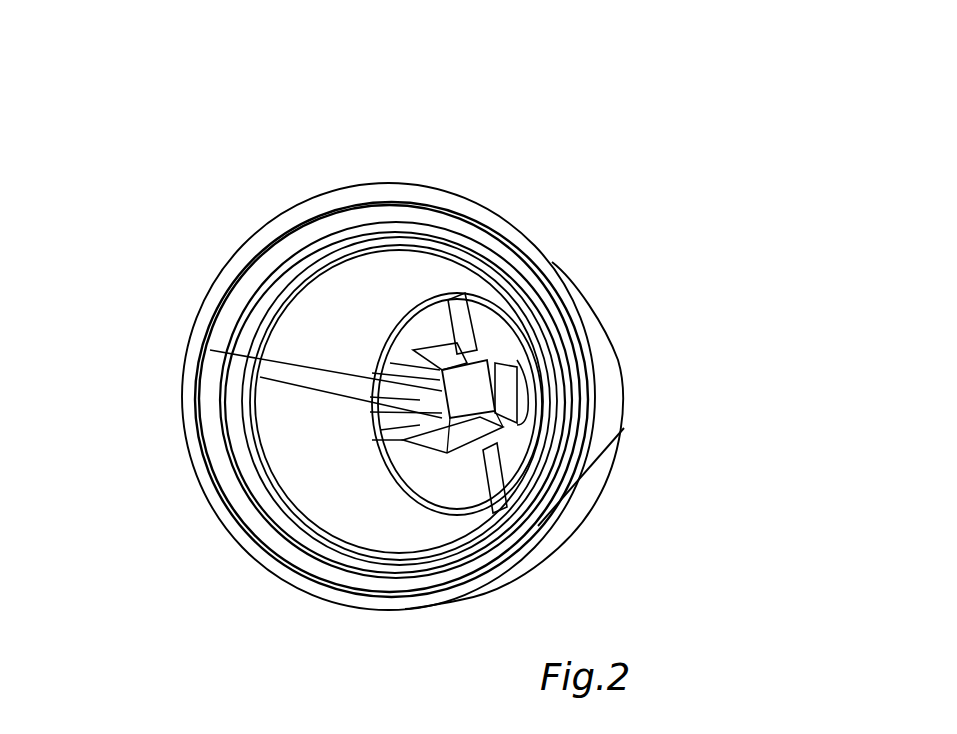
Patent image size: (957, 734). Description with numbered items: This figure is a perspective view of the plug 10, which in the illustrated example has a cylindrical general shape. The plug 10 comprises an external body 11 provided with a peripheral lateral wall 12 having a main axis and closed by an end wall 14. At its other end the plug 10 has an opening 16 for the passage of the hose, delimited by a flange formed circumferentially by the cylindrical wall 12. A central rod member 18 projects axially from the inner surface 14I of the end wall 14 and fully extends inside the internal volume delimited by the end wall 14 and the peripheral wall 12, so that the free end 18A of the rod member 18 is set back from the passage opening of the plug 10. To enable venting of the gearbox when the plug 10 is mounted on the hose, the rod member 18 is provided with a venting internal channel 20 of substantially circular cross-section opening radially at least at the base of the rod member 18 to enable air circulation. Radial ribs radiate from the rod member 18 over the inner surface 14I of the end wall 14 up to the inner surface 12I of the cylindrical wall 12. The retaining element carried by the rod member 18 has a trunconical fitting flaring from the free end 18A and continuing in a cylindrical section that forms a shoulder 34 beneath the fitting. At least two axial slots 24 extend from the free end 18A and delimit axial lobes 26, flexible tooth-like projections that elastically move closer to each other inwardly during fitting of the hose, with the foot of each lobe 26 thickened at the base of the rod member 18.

The plug 10 is at (572, 167).
The external body 11 is at (577, 528).
The peripheral lateral wall 12 is at (607, 420).
The inner surface of the cylindrical wall 12I is at (304, 253).
The end wall 14 is at (613, 345).
The inner surface of the end wall 14I is at (457, 472).
The opening 16 is at (240, 268).
The central rod member 18 is at (425, 337).
The free end of the rod member 18A is at (247, 362).
The venting internal channel 20 is at (385, 416).
The axial slots 24 is at (545, 455).
The axial lobes 26 is at (520, 380).
The shoulder 34 is at (493, 295).